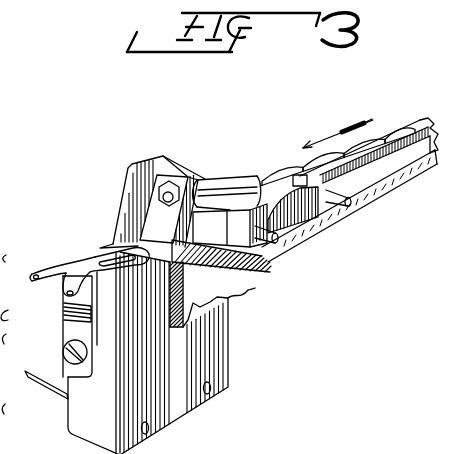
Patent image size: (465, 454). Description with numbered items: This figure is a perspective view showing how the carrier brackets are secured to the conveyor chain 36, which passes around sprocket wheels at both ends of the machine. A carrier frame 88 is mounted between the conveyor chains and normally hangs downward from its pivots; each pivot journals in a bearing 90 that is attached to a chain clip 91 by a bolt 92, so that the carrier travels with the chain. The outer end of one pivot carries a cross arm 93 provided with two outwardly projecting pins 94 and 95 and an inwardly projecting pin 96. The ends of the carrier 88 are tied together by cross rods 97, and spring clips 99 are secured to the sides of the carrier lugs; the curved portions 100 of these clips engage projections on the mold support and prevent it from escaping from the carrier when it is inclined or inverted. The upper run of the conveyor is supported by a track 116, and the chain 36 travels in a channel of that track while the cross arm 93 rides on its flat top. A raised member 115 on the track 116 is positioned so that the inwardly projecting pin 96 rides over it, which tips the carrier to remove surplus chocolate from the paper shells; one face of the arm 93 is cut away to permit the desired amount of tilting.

The conveyor chain 36 is at (88, 257).
The carrier frame 88 is at (228, 347).
The bearing 90 is at (190, 169).
The chain clip 91 is at (142, 213).
The bolt 92 is at (171, 186).
The cross arm 93 is at (298, 217).
The outwardly projecting pin 94 is at (275, 240).
The outwardly projecting pin 95 is at (338, 214).
The inwardly projecting pin 96 is at (295, 180).
The cross rod 97 is at (48, 367).
The spring clip 99 is at (70, 328).
The curved portion 100 is at (64, 310).
The raised member 115 is at (378, 158).
The track 116 is at (377, 200).